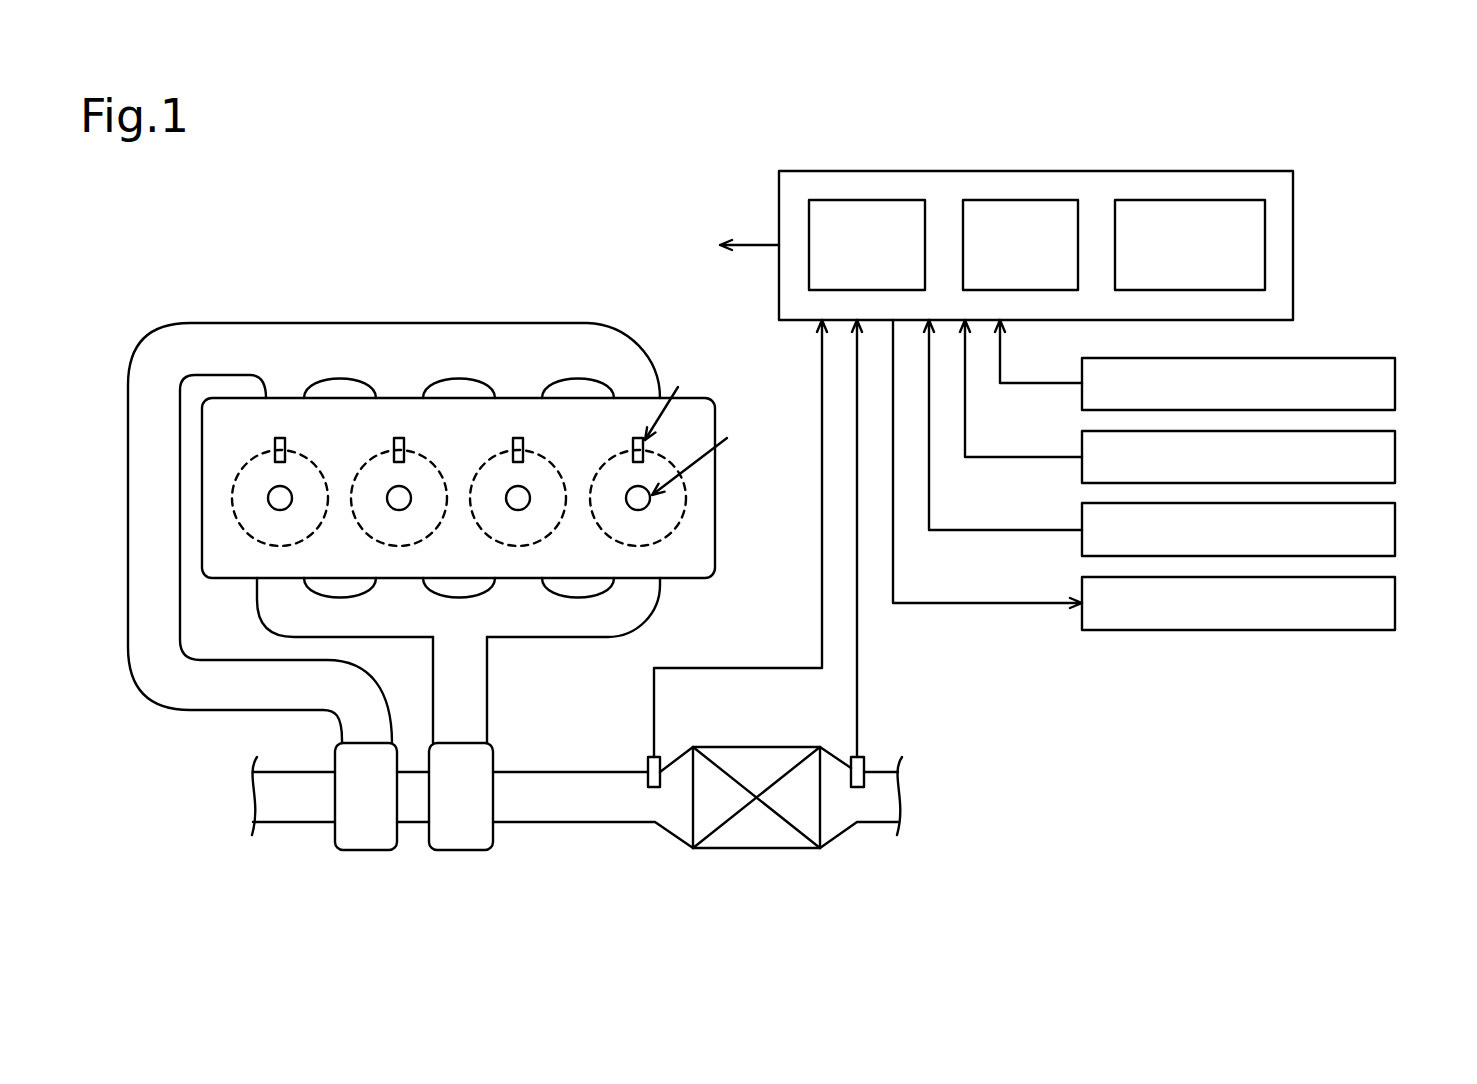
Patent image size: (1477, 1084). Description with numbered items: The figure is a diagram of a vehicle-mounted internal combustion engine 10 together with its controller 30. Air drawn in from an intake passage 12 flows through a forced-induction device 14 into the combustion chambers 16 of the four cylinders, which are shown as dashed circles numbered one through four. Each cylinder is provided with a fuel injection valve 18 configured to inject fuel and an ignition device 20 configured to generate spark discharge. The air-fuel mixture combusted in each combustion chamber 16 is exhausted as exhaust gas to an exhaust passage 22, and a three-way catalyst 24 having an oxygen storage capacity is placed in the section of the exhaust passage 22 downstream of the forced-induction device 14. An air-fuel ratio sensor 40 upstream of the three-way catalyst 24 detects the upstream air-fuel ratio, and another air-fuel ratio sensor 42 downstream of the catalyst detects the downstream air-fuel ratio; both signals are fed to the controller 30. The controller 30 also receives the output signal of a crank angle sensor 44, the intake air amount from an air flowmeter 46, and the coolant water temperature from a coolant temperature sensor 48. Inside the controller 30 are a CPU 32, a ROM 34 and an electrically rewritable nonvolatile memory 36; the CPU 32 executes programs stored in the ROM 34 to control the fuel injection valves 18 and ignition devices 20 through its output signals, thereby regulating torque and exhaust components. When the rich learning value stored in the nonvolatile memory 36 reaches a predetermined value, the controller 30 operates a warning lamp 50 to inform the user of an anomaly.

The internal combustion engine 10 is at (507, 259).
The intake passage 12 is at (284, 822).
The forced-induction device 14 is at (402, 853).
The combustion chamber 16 is at (247, 477).
The fuel injection valve 18 is at (285, 438).
The ignition device 20 is at (292, 500).
The exhaust passage 22 is at (655, 607).
The three-way catalyst 24 is at (760, 848).
The controller 30 is at (1275, 171).
The CPU 32 is at (866, 200).
The ROM 34 is at (1020, 200).
The nonvolatile memory 36 is at (1190, 200).
The air-fuel ratio sensor 40 is at (648, 760).
The air-fuel ratio sensor 42 is at (860, 757).
The crank angle sensor 44 is at (1396, 385).
The air flowmeter 46 is at (1396, 458).
The coolant temperature sensor 48 is at (1396, 532).
The warning lamp 50 is at (1396, 605).